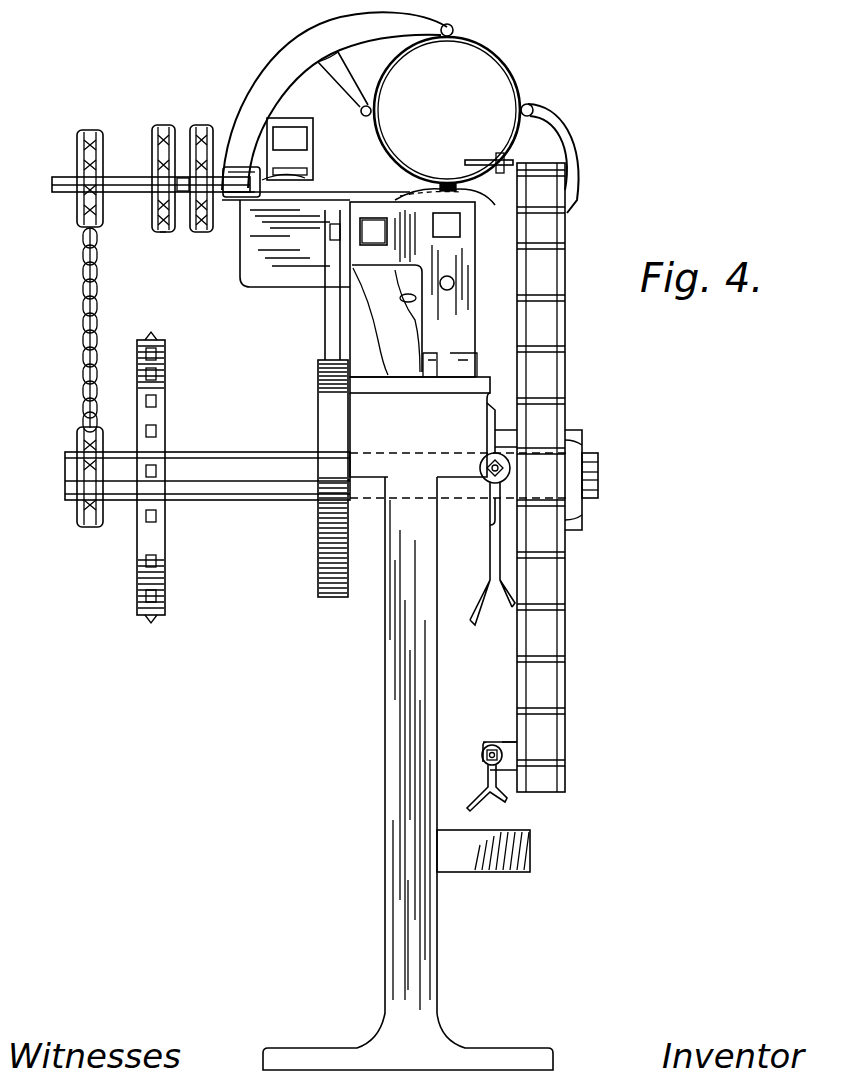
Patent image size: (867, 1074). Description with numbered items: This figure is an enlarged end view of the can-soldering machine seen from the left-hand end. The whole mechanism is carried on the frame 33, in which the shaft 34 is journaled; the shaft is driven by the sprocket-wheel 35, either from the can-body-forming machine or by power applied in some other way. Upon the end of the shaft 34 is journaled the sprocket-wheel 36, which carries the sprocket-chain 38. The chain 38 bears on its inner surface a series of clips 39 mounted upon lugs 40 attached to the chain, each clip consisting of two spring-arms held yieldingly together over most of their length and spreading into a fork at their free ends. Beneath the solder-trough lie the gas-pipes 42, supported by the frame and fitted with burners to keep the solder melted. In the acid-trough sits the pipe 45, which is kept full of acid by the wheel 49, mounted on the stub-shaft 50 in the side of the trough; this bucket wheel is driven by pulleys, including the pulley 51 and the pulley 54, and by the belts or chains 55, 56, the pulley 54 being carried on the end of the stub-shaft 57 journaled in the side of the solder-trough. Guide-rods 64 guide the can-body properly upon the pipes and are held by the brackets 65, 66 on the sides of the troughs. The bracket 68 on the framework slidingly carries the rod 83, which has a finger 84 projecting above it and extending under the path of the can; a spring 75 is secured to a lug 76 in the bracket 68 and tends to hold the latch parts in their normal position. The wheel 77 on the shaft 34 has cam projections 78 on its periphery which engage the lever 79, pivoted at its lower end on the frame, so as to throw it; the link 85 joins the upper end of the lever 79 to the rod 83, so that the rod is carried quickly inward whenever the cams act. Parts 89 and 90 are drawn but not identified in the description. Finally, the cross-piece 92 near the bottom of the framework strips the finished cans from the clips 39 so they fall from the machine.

The frame 33 is at (408, 773).
The shaft 34 is at (212, 463).
The sprocket-wheel 35 is at (157, 387).
The sprocket-wheel 36 is at (570, 428).
The sprocket-chain 38 is at (560, 326).
The clips 39 is at (490, 548).
The lugs 40 is at (508, 465).
The gas-pipes 42 is at (448, 276).
The pipe 45 is at (350, 191).
The wheel 49 is at (298, 139).
The stub-shaft 50 is at (183, 177).
The pulley 51 is at (210, 138).
The pulley 54 is at (78, 146).
The belt or chain 55 is at (208, 229).
The belt or chain 56 is at (88, 282).
The stub-shaft 57 is at (113, 182).
The guide-rods 64 is at (454, 31).
The bracket 65 is at (298, 68).
The bracket 66 is at (580, 152).
The bracket 68 is at (411, 234).
The spring 75 is at (400, 298).
The lug 76 is at (405, 290).
The wheel 77 is at (322, 424).
The cam projections 78 is at (318, 582).
The lever 79 is at (325, 313).
The rod 83 is at (373, 231).
The finger 84 is at (408, 190).
The link 85 is at (330, 232).
The sprocket wheel 89 is at (171, 231).
The sprocket wheel 90 is at (160, 231).
The cross-piece 92 is at (483, 851).